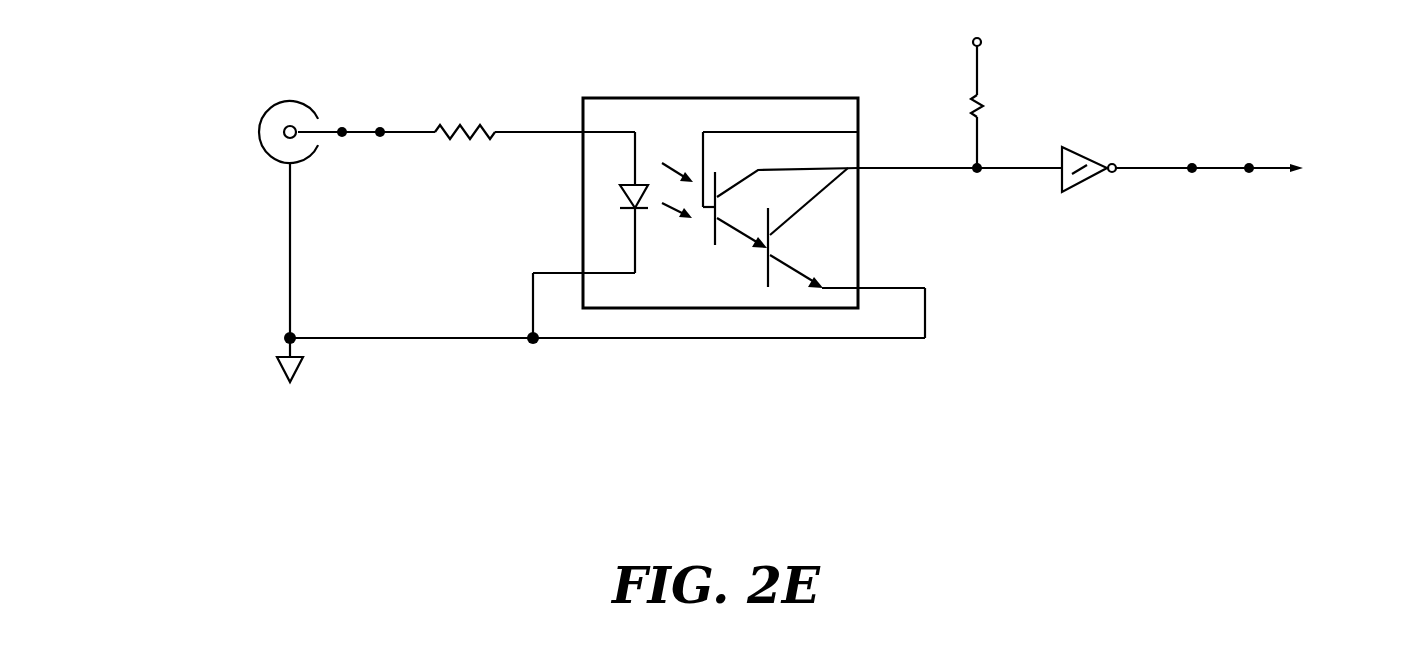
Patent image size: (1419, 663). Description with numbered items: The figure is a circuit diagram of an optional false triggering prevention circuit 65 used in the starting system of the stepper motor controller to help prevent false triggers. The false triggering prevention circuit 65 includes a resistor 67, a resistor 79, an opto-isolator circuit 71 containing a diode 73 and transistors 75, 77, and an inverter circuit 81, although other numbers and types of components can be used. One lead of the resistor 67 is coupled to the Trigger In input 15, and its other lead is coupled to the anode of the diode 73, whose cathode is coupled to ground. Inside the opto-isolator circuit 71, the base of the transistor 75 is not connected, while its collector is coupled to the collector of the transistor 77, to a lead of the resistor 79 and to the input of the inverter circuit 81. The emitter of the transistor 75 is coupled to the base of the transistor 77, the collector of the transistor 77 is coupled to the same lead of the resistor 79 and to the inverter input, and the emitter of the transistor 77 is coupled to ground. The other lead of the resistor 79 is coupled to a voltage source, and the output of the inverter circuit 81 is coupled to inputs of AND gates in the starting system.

The Trigger In input 15 is at (267, 127).
The false triggering prevention circuit 65 is at (168, 272).
The resistor 67 is at (495, 132).
The opto-isolator circuit 71 is at (602, 107).
The diode 73 is at (640, 183).
The transistor 75 is at (715, 212).
The transistor 77 is at (770, 248).
The resistor 79 is at (977, 92).
The inverter circuit 81 is at (1068, 147).